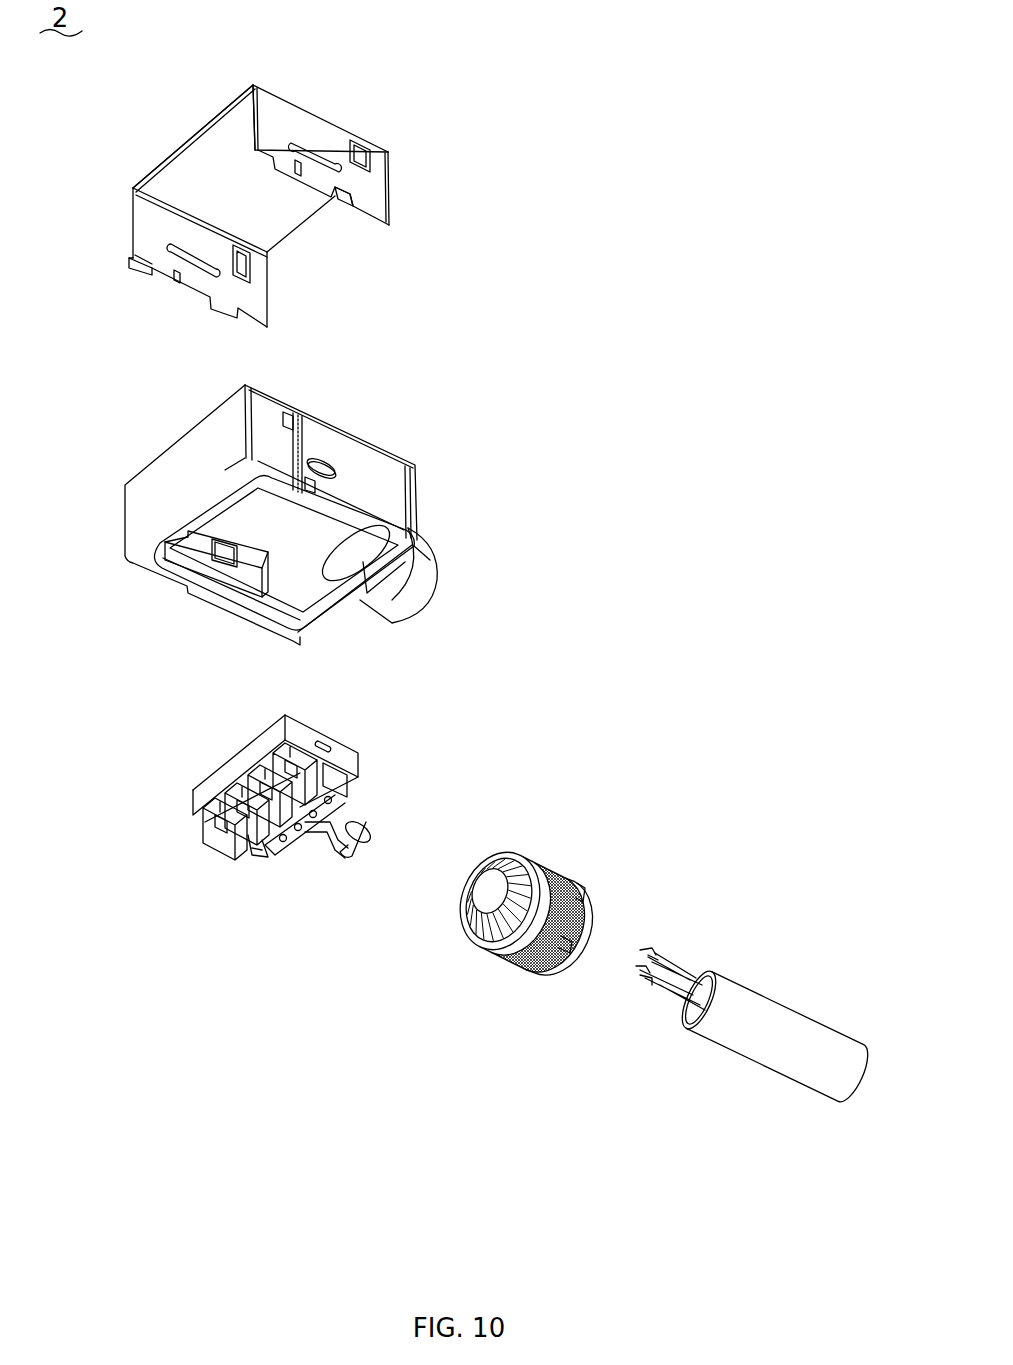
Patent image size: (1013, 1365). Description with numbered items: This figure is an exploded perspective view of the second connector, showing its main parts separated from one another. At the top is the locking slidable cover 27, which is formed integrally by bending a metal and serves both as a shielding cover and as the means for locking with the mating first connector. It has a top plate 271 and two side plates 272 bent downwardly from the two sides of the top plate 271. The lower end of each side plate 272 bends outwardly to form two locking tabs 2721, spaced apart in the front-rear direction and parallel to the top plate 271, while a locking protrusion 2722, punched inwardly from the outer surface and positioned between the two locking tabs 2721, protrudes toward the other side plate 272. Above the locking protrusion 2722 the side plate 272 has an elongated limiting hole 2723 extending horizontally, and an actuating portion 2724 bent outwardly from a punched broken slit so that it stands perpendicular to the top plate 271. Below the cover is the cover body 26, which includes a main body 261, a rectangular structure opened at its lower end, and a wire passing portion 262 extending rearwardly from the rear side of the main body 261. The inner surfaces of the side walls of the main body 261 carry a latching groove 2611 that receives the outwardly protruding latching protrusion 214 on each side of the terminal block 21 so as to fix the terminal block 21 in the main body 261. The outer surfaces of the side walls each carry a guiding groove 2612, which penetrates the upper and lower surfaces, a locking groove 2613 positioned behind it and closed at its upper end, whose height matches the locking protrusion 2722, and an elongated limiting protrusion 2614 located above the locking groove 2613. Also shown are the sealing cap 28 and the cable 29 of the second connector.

The locking slidable cover 27 is at (386, 110).
The top plate 271 is at (190, 147).
The side plate 272 is at (266, 110).
The locking tab 2721 is at (356, 201).
The locking protrusion 2722 is at (298, 172).
The limiting hole 2723 is at (312, 158).
The actuating portion 2724 is at (368, 150).
The cover body 26 is at (430, 424).
The main body 261 is at (160, 478).
The latching groove 2611 is at (220, 552).
The guiding groove 2612 is at (290, 425).
The locking groove 2613 is at (318, 486).
The limiting protrusion 2614 is at (322, 458).
The wire passing portion 262 is at (418, 592).
The terminal block 21 is at (210, 762).
The latching protrusion 214 is at (326, 745).
The sealing cap 28 is at (566, 850).
The cable 29 is at (772, 982).